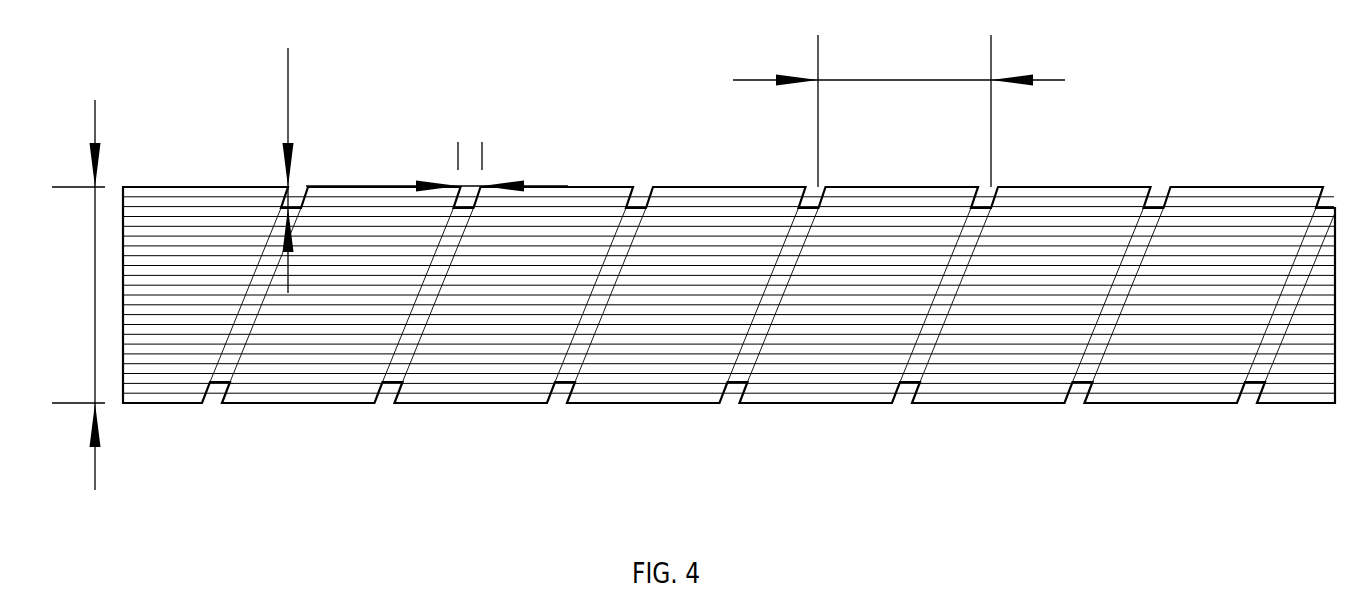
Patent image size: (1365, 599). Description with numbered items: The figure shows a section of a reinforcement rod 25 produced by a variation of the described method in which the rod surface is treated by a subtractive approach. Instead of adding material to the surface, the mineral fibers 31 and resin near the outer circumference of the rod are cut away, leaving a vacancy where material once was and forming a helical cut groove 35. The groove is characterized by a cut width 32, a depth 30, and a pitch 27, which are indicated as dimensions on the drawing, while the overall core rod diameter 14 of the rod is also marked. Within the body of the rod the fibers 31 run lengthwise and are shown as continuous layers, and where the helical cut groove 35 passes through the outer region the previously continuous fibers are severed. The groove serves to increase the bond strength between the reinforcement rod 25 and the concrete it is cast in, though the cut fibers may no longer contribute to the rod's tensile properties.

The core rod diameter 14 is at (69, 295).
The reinforcement rod 25 is at (695, 253).
The pitch 27 is at (899, 103).
The depth 30 is at (261, 170).
The fibers 31 is at (568, 237).
The cut width 32 is at (437, 159).
The helical cut groove 35 is at (635, 198).